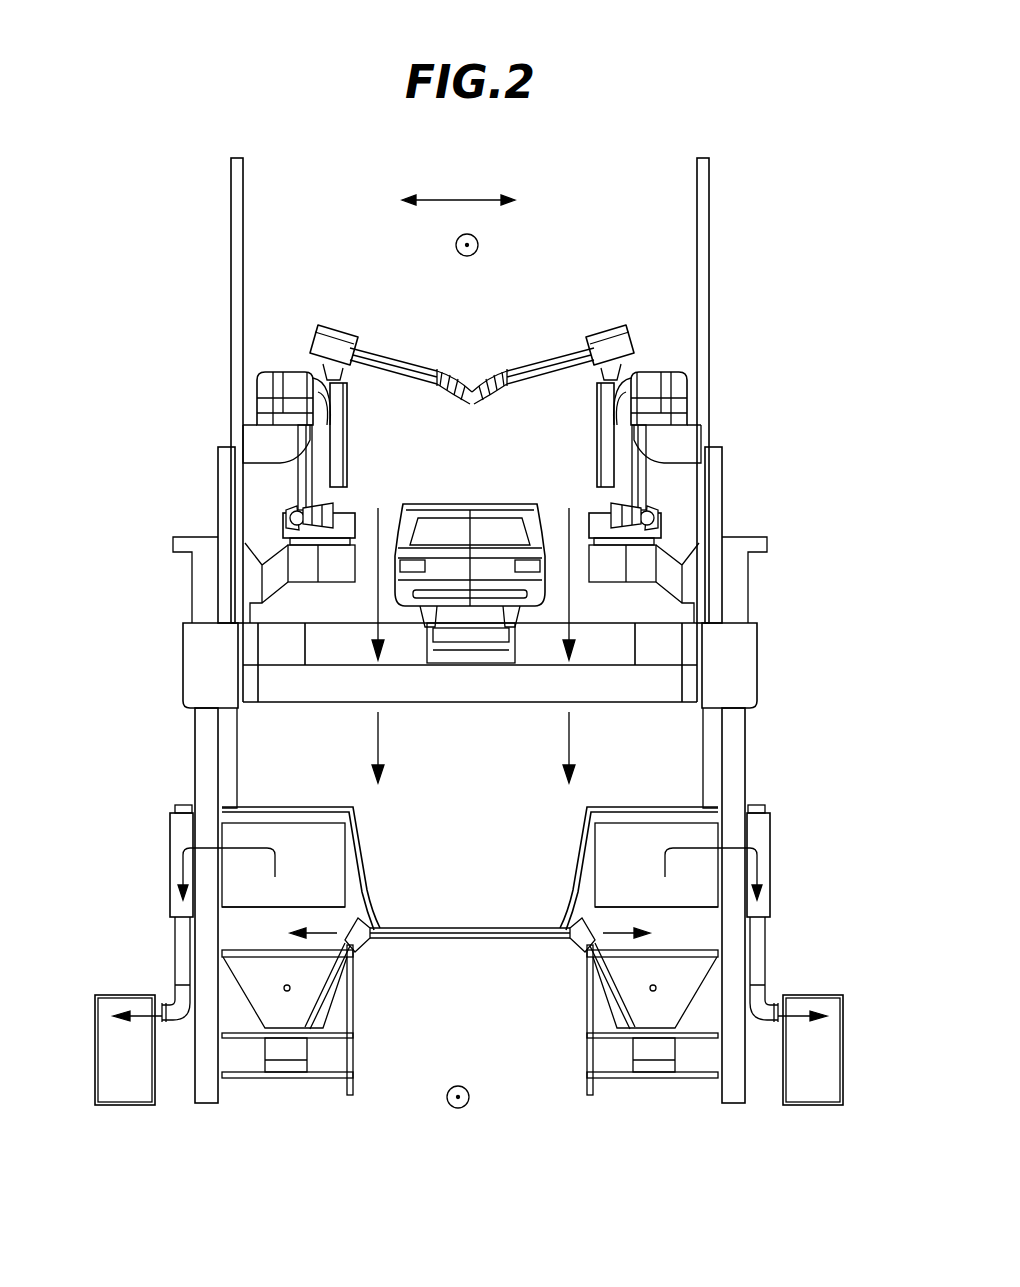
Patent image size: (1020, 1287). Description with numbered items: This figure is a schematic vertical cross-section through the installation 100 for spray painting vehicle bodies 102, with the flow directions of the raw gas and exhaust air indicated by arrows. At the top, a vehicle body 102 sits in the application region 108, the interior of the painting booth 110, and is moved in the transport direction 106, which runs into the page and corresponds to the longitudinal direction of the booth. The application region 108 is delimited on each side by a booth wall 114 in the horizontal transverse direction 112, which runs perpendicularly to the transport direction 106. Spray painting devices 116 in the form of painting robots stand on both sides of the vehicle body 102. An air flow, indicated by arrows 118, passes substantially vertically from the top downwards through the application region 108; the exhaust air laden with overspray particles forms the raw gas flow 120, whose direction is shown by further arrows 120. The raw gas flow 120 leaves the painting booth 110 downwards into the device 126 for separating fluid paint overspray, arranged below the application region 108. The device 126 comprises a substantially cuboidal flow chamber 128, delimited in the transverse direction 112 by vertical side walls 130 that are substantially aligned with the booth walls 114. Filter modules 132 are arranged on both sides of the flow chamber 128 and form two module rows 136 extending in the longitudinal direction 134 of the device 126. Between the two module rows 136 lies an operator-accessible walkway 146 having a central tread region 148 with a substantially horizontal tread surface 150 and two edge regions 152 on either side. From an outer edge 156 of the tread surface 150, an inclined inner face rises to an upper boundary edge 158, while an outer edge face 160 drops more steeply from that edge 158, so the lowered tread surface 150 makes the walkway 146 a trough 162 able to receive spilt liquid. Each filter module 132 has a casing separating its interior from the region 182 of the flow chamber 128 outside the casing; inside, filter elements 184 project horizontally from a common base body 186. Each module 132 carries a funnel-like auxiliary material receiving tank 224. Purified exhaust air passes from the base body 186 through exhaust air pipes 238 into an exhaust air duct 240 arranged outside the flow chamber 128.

The installation 100 is at (172, 183).
The vehicle bodies 102 is at (470, 520).
The transport direction 106 is at (478, 245).
The application region 108 is at (488, 339).
The painting booth 110 is at (722, 201).
The transverse direction 112 is at (466, 200).
The booth wall 114 is at (235, 290).
The spray painting devices 116 is at (385, 358).
The arrows 118 is at (380, 520).
The raw gas flow 120 is at (378, 730).
The device for separating fluid paint overspray 126 is at (760, 757).
The flow chamber 128 is at (488, 761).
The vertical side walls 130 is at (230, 722).
The filter modules 132 is at (158, 822).
The longitudinal direction 134 is at (470, 1097).
The module rows 136 is at (278, 796).
The walkway 146 is at (452, 952).
The tread region 148 is at (530, 940).
The tread surface 150 is at (485, 928).
The edge regions 152 is at (375, 918).
The outer edge 156 is at (380, 938).
The upper boundary edge 158 is at (365, 930).
The outer edge face 160 is at (338, 960).
The trough 162 is at (500, 952).
The region 182 is at (488, 811).
The filter elements 184 is at (328, 856).
The base body 186 is at (178, 912).
The auxiliary material receiving tank 224 is at (258, 987).
The exhaust air pipes 238 is at (190, 945).
The exhaust air duct 240 is at (130, 1080).